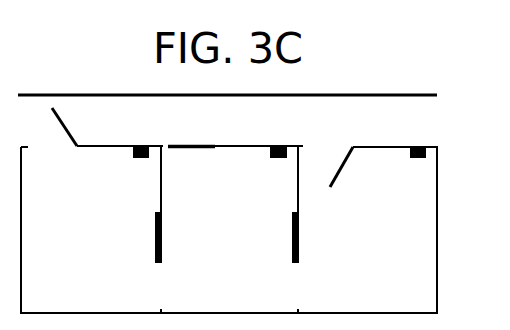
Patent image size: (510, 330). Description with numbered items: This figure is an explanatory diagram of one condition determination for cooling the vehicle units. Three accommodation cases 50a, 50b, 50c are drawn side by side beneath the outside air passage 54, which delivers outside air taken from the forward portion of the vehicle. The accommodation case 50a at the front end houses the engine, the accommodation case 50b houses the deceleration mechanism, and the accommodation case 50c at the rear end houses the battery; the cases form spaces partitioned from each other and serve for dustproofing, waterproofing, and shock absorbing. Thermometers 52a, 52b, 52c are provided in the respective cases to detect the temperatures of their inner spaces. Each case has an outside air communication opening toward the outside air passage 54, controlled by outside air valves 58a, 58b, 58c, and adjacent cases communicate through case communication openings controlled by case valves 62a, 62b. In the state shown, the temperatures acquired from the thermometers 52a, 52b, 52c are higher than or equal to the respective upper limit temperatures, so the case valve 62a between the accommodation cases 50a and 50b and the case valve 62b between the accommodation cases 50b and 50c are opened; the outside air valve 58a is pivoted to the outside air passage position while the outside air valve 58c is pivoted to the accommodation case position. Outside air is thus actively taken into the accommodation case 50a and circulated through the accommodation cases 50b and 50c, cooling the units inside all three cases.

The outside air passage 54 is at (267, 132).
The accommodation case 50a is at (112, 266).
The accommodation case 50b is at (251, 266).
The accommodation case 50c is at (388, 266).
The outside air valve 58a is at (64, 133).
The outside air valve 58b is at (200, 148).
The outside air valve 58c is at (342, 177).
The thermometer 52a is at (140, 159).
The thermometer 52b is at (279, 159).
The thermometer 52c is at (418, 159).
The case valve 62a is at (160, 243).
The case valve 62b is at (297, 243).